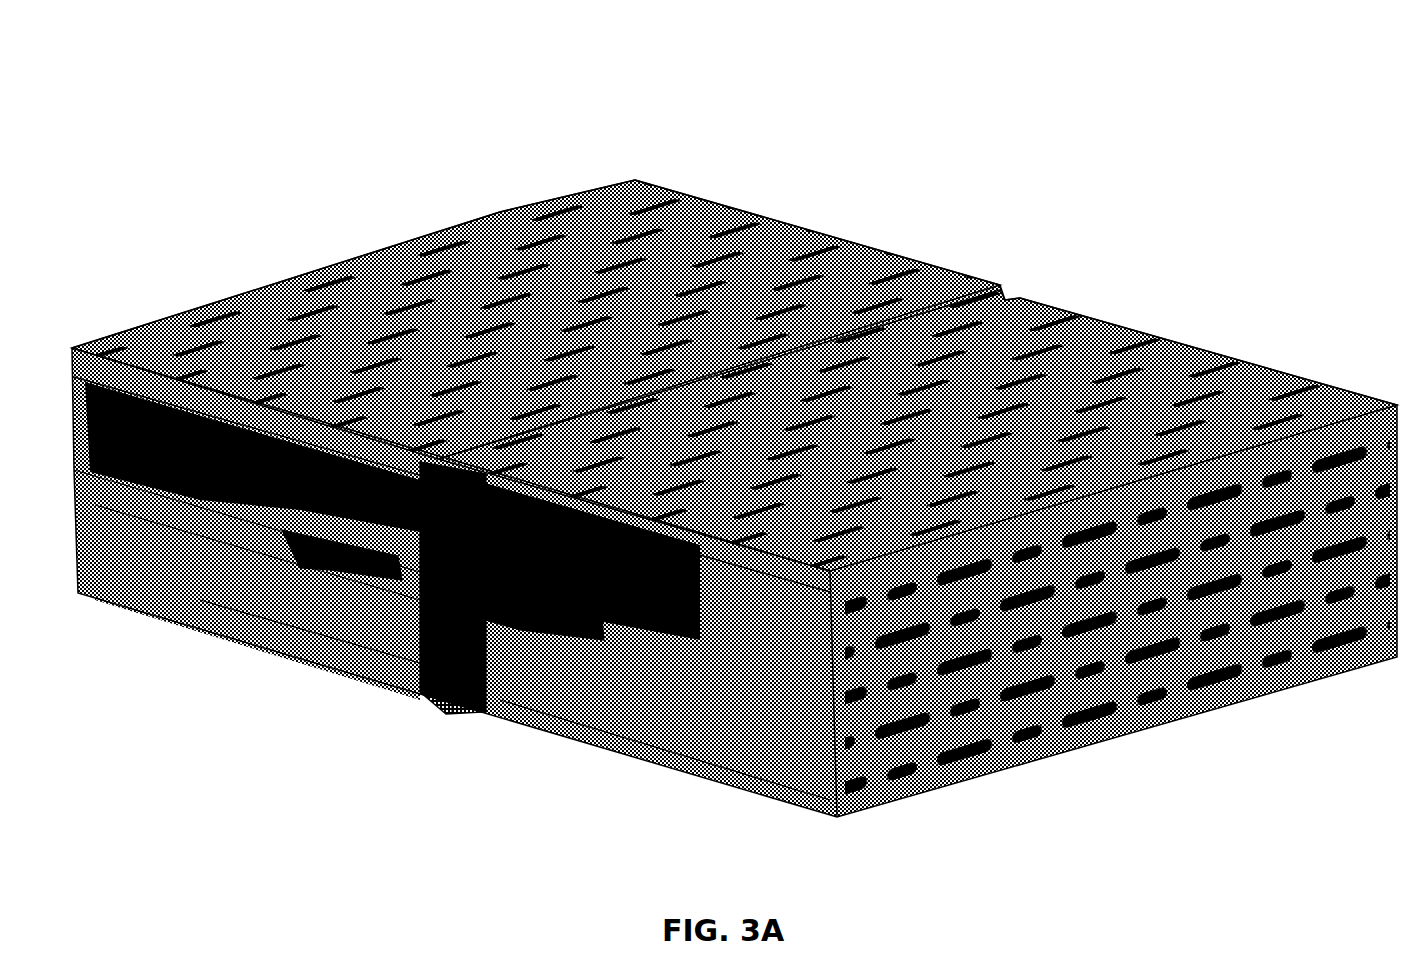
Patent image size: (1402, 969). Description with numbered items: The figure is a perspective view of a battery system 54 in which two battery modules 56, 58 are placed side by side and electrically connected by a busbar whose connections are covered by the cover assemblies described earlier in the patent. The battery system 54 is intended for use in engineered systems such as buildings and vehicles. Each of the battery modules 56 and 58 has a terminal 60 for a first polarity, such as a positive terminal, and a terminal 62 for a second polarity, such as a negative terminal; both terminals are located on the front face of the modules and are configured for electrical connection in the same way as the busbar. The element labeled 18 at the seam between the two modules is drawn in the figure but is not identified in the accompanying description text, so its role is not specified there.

The battery system 54 is at (930, 96).
The battery module 58 is at (742, 232).
The battery module 56 is at (1165, 365).
The bracket 18 is at (440, 468).
The terminal 62 is at (320, 560).
The terminal 60 is at (530, 600).